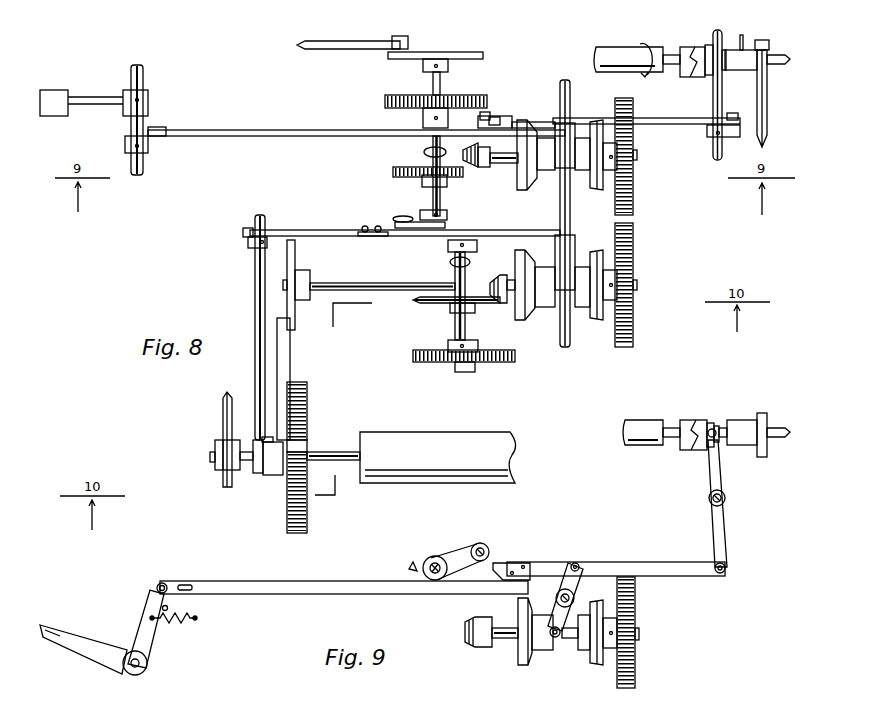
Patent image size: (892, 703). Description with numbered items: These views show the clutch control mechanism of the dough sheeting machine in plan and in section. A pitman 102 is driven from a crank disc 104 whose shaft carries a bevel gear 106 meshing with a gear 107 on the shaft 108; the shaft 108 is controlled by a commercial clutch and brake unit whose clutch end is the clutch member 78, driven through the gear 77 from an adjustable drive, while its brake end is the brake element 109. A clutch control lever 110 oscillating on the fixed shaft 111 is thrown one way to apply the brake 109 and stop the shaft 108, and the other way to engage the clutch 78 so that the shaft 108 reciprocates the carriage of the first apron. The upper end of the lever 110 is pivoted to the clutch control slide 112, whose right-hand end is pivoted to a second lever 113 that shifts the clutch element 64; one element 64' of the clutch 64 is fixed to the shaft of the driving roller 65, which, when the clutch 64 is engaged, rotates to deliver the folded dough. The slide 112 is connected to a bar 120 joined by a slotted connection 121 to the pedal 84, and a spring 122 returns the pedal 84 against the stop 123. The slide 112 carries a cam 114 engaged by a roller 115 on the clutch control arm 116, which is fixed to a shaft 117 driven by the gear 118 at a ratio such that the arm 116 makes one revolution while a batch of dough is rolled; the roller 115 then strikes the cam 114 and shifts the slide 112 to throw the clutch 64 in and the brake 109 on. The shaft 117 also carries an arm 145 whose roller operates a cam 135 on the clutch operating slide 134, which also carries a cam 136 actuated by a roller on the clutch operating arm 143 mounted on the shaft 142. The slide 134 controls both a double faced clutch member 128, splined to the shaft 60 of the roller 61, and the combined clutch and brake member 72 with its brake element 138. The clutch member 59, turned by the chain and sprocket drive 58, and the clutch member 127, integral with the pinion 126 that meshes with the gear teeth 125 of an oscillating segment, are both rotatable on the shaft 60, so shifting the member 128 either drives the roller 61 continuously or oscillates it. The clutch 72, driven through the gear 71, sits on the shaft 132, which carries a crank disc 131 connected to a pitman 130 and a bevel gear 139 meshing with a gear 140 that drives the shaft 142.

In FIG. 8, the chain and sprocket drive 58 is at (222, 420).
In FIG. 8, the clutch member 59 is at (237, 480).
In FIG. 8, the shaft 60 is at (323, 453).
In FIG. 8, the roller 61 is at (437, 443).
In FIG. 8, the clutch 64 is at (746, 47).
In FIG. 9, the clutch 64 is at (748, 424).
In FIG. 8, the clutch element 64' is at (682, 48).
In FIG. 9, the clutch element 64' is at (690, 420).
In FIG. 8, the driving roller 65 is at (625, 30).
In FIG. 9, the driving roller 65 is at (643, 427).
In FIG. 8, the gear 71 is at (627, 272).
In FIG. 8, the combination clutch and brake member 72 is at (596, 320).
In FIG. 8, the gear 77 is at (635, 180).
In FIG. 9, the gear 77 is at (635, 608).
In FIG. 8, the clutch and brake mechanism 78 is at (596, 186).
In FIG. 9, the clutch and brake mechanism 78 is at (596, 660).
In FIG. 8, the pedal 84 is at (49, 96).
In FIG. 9, the pedal 84 is at (50, 627).
In FIG. 8, the pitman 102 is at (337, 43).
In FIG. 8, the crank disc 104 is at (457, 52).
In FIG. 8, the bevel gear 106 is at (458, 178).
In FIG. 8, the gear 107 is at (483, 172).
In FIG. 8, the shaft 108 is at (513, 164).
In FIG. 9, the shaft 108 is at (505, 627).
In FIG. 8, the brake element 109 is at (530, 142).
In FIG. 9, the brake element 109 is at (525, 657).
In FIG. 8, the clutch control lever 110 is at (576, 124).
In FIG. 9, the clutch control lever 110 is at (567, 567).
In FIG. 8, the fixed shaft 111 is at (567, 82).
In FIG. 9, the fixed shaft 111 is at (576, 593).
In FIG. 8, the clutch control slide 112 is at (640, 117).
In FIG. 9, the clutch control slide 112 is at (538, 566).
In FIG. 9, the second lever 113 is at (720, 527).
In FIG. 8, the cam 114 is at (520, 122).
In FIG. 9, the cam 114 is at (500, 563).
In FIG. 8, the roller 115 is at (494, 117).
In FIG. 9, the roller 115 is at (481, 544).
In FIG. 8, the clutch control arm 116 is at (492, 113).
In FIG. 9, the clutch control arm 116 is at (447, 557).
In FIG. 8, the shaft 117 is at (431, 143).
In FIG. 9, the shaft 117 is at (413, 563).
In FIG. 8, the gear 118 is at (387, 100).
In FIG. 8, the bar 120 is at (217, 130).
In FIG. 9, the bar 120 is at (248, 590).
In FIG. 9, the slotted connection 121 is at (178, 583).
In FIG. 9, the spring 122 is at (170, 620).
In FIG. 9, the stop 123 is at (168, 608).
In FIG. 8, the gear teeth 125 is at (308, 393).
In FIG. 8, the pinion 126 is at (308, 440).
In FIG. 8, the clutch member 127 is at (285, 497).
In FIG. 8, the double faced clutch member 128 is at (257, 480).
In FIG. 8, the pitman 130 is at (281, 370).
In FIG. 8, the crank disc 131 is at (289, 317).
In FIG. 8, the shaft 132 is at (363, 285).
In FIG. 8, the clutch operating slide 134 is at (297, 229).
In FIG. 8, the cam 135 is at (375, 227).
In FIG. 8, the cam 136 is at (528, 237).
In FIG. 8, the brake element 138 is at (527, 320).
In FIG. 8, the bevel gear 139 is at (507, 260).
In FIG. 8, the gear 140 is at (433, 303).
In FIG. 8, the shaft 142 is at (463, 325).
In FIG. 8, the clutch operating arm 143 is at (458, 254).
In FIG. 8, the arm 145 is at (418, 222).